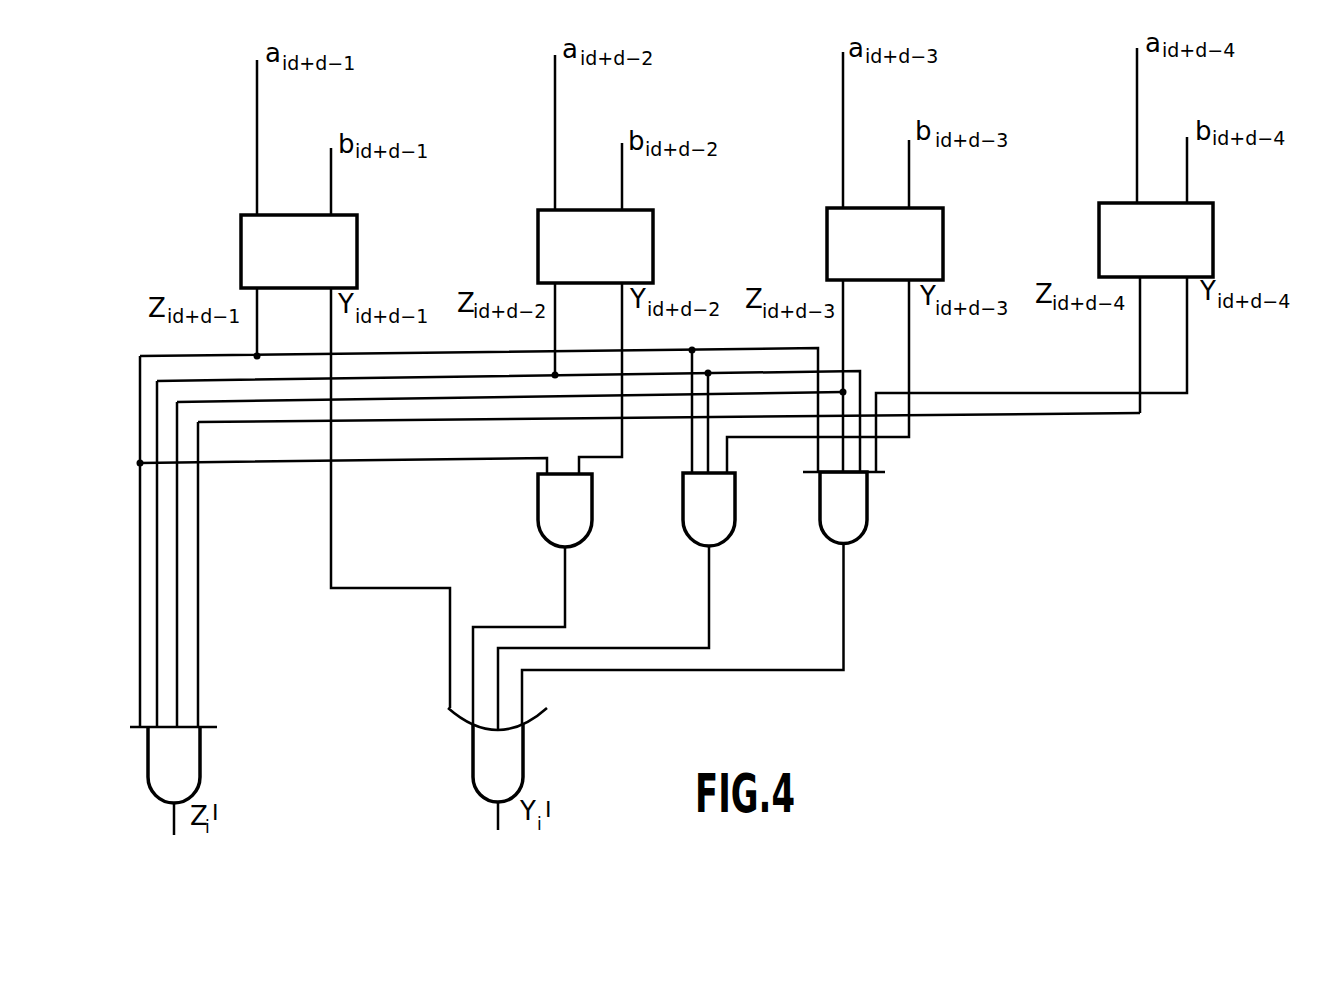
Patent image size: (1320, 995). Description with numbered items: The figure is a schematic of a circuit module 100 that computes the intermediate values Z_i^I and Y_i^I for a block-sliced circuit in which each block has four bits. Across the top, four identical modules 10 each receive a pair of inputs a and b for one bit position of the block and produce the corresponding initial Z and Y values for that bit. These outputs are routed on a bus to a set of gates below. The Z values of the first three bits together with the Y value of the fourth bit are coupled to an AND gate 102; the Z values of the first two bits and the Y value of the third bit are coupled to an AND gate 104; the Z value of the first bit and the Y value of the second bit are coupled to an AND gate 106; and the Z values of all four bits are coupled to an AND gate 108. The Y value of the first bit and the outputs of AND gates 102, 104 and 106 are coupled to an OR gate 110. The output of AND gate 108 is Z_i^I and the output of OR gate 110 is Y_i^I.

The module 10 is at (357, 243).
The circuit module 100 is at (965, 533).
The AND gate 102 is at (822, 541).
The AND gate 104 is at (683, 541).
The AND gate 106 is at (540, 543).
The AND gate 108 is at (200, 775).
The OR gate 110 is at (472, 768).